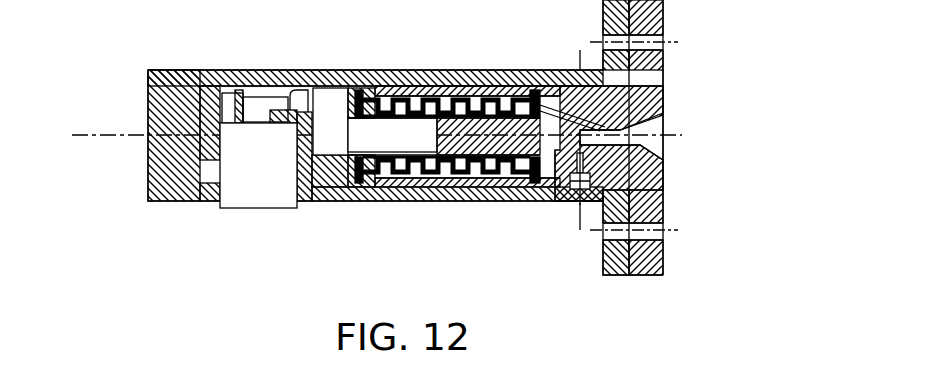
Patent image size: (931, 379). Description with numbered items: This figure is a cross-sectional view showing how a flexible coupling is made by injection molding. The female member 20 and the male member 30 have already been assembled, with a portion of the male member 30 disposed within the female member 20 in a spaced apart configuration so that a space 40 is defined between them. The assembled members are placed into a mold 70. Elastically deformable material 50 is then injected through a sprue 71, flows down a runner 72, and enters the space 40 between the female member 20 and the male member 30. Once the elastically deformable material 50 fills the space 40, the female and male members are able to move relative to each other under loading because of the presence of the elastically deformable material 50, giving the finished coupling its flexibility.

The female member 20 is at (413, 93).
The male member 30 is at (344, 201).
The space 40 is at (470, 188).
The elastically deformable material 50 is at (555, 188).
The mold 70 is at (223, 69).
The sprue 71 is at (652, 128).
The runner 72 is at (622, 84).